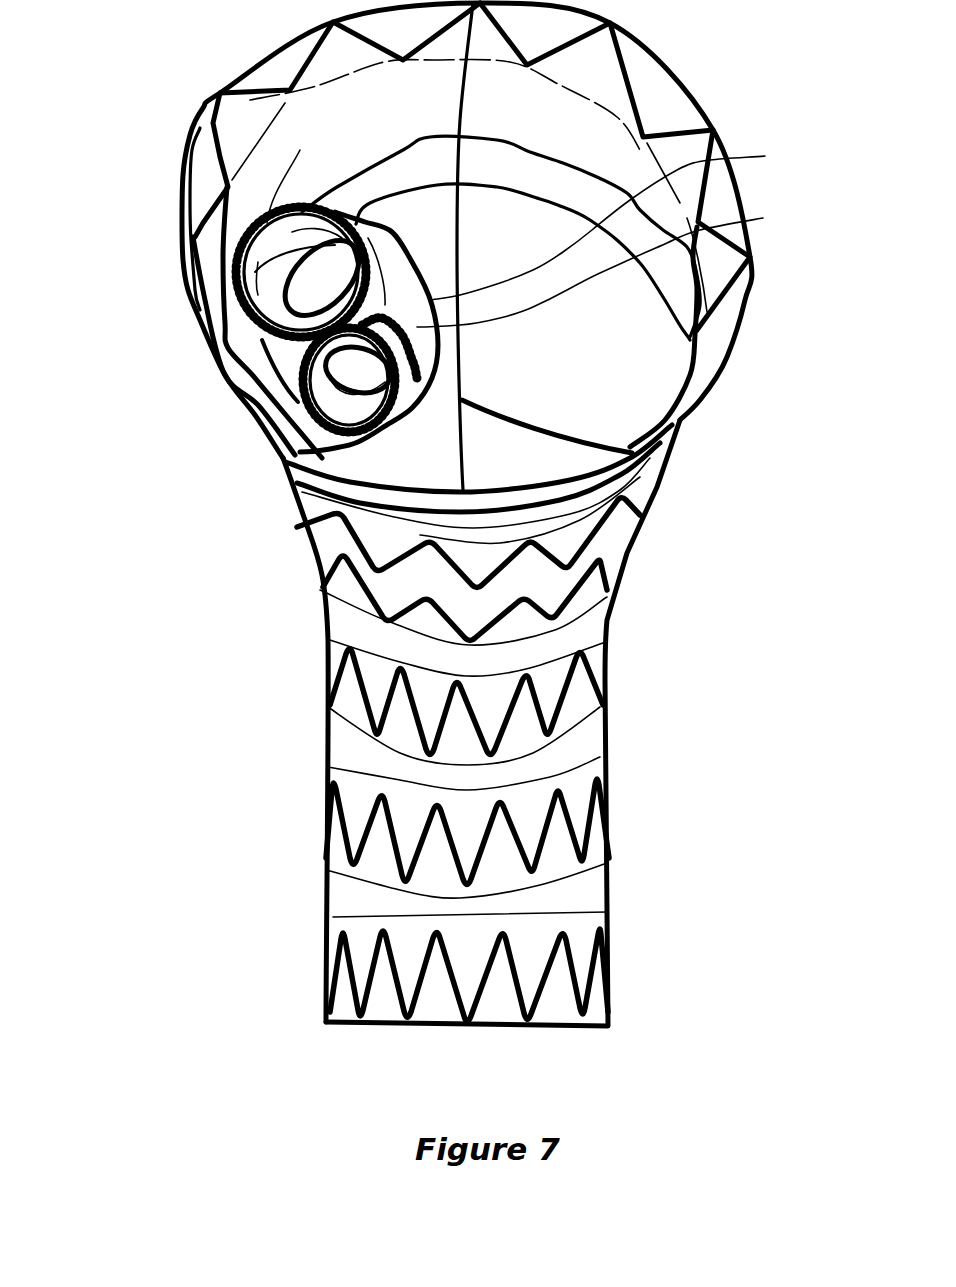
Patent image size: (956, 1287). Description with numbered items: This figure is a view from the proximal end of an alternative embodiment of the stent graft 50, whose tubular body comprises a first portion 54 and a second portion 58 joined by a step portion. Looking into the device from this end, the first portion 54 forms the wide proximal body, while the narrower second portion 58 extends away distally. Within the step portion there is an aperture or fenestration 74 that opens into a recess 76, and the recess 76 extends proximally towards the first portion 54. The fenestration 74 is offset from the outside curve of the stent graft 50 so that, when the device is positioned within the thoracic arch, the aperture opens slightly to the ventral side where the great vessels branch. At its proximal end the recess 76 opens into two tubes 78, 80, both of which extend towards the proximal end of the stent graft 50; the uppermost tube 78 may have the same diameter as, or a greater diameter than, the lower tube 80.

The stent graft 50 is at (186, 592).
The first portion 54 is at (670, 103).
The second portion 58 is at (334, 894).
The aperture or fenestration 74 is at (612, 222).
The recess 76 is at (605, 266).
The tube 78 is at (262, 262).
The tube 80 is at (327, 397).